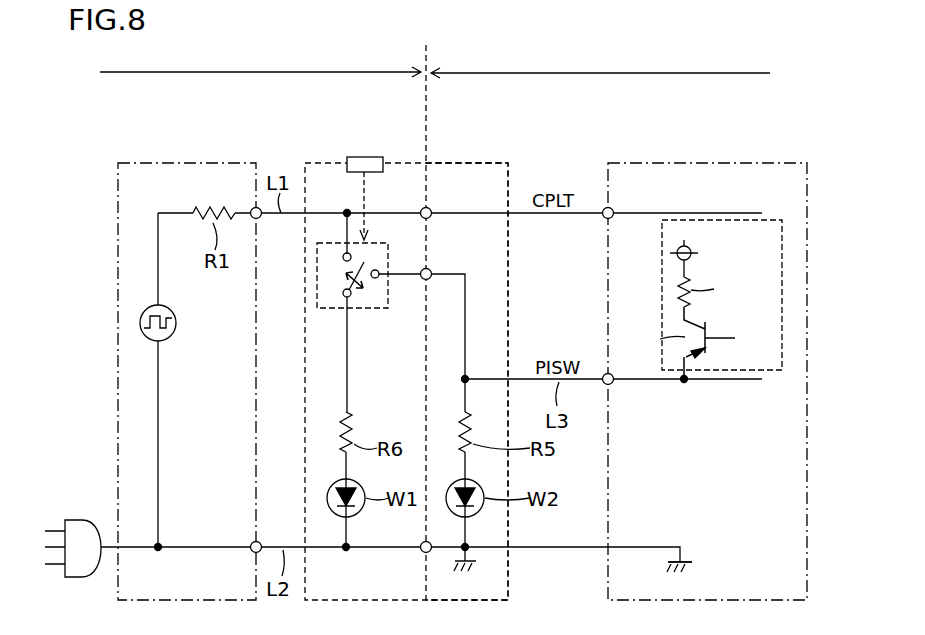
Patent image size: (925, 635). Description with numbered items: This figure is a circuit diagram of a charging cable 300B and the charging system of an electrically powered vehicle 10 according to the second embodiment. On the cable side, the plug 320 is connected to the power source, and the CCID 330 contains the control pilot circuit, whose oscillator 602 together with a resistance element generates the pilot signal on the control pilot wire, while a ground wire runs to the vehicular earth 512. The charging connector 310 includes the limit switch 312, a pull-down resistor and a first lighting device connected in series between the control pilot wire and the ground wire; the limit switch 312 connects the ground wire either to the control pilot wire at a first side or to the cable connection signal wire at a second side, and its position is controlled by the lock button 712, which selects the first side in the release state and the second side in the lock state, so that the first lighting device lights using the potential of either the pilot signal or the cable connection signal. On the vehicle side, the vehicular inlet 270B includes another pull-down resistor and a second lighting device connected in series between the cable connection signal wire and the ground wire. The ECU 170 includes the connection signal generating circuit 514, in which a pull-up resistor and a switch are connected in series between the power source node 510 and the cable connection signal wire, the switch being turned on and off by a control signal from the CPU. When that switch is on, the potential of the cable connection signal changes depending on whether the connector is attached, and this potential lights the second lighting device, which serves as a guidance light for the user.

The charging cable 300B is at (260, 63).
The electrically powered vehicle 10 is at (600, 50).
The CCID 330 is at (192, 163).
The charging connector 310 is at (322, 163).
The vehicular inlet 270B is at (478, 163).
The ECU 170 is at (716, 163).
The lock button 712 is at (372, 157).
The limit switch 312 is at (376, 310).
The oscillator 602 is at (171, 336).
The plug 320 is at (80, 520).
The power source node 510 is at (693, 249).
The connection signal generating circuit 514 is at (698, 319).
The vehicular earth 512 is at (700, 571).